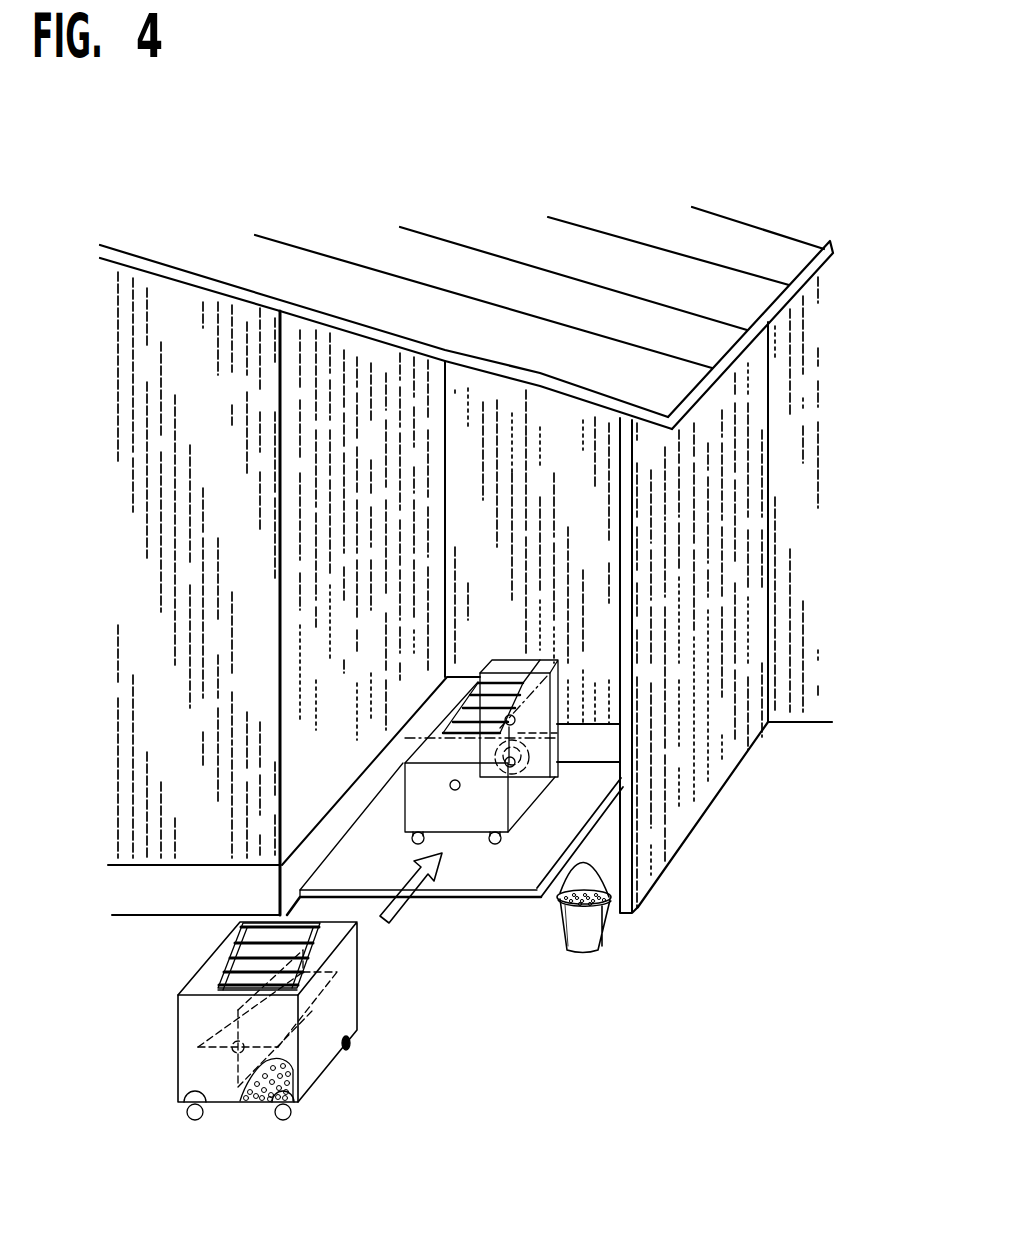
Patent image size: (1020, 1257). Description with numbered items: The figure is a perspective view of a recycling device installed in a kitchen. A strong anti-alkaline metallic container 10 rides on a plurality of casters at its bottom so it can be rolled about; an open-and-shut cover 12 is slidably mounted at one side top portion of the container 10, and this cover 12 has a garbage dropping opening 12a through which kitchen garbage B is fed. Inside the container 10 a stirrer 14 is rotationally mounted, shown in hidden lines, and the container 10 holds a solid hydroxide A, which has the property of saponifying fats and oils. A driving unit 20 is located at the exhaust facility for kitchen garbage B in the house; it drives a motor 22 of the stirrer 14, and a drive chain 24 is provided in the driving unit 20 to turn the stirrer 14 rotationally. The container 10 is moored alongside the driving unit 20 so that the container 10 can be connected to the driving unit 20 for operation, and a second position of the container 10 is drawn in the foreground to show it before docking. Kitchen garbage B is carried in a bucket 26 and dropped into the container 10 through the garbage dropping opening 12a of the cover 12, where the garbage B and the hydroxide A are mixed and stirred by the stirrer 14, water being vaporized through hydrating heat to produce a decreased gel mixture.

The metallic container 10 is at (178, 1035).
The open-and-shut cover 12 is at (210, 978).
The garbage dropping opening 12a is at (272, 952).
The stirrer 14 is at (312, 1007).
The driving unit 20 is at (560, 670).
The motor 22 is at (530, 763).
The drive chain 24 is at (557, 740).
The bucket 26 is at (608, 933).
The solid hydroxide A is at (262, 1103).
The kitchen garbage B is at (558, 930).